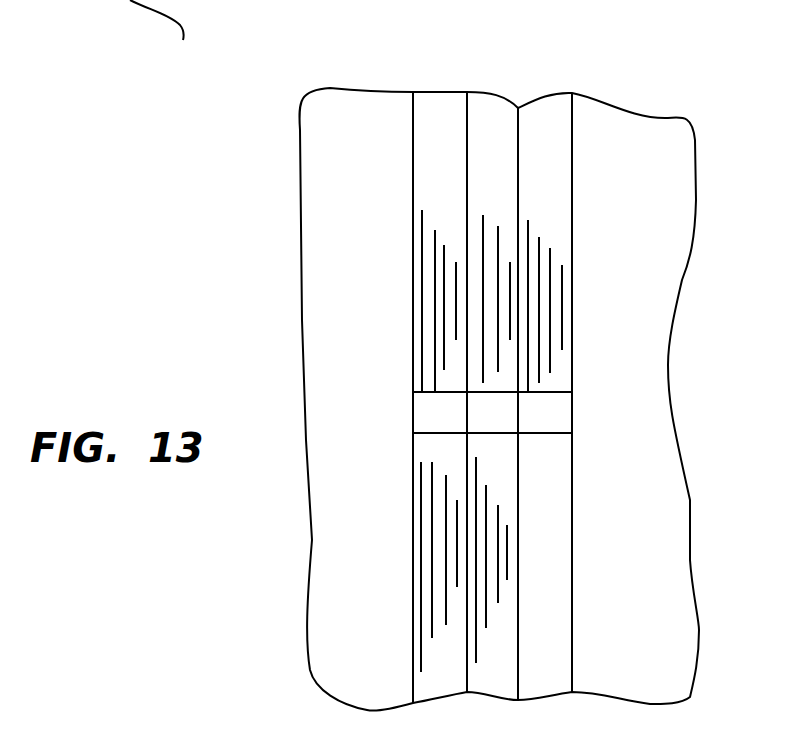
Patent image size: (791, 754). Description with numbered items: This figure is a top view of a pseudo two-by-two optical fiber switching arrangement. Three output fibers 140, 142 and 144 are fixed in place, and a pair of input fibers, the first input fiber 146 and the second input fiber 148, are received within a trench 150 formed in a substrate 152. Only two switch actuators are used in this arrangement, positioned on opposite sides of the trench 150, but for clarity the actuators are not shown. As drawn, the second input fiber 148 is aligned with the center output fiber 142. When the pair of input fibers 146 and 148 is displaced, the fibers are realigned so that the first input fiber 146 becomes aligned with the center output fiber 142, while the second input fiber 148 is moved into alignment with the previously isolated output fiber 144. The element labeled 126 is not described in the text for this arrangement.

The housing portion 126 is at (178, 39).
The output fiber 140 is at (433, 115).
The center output fiber 142 is at (495, 115).
The output fiber 144 is at (548, 117).
The first input fiber 146 is at (423, 607).
The second input fiber 148 is at (487, 652).
The trench 150 is at (555, 497).
The substrate 152 is at (330, 377).